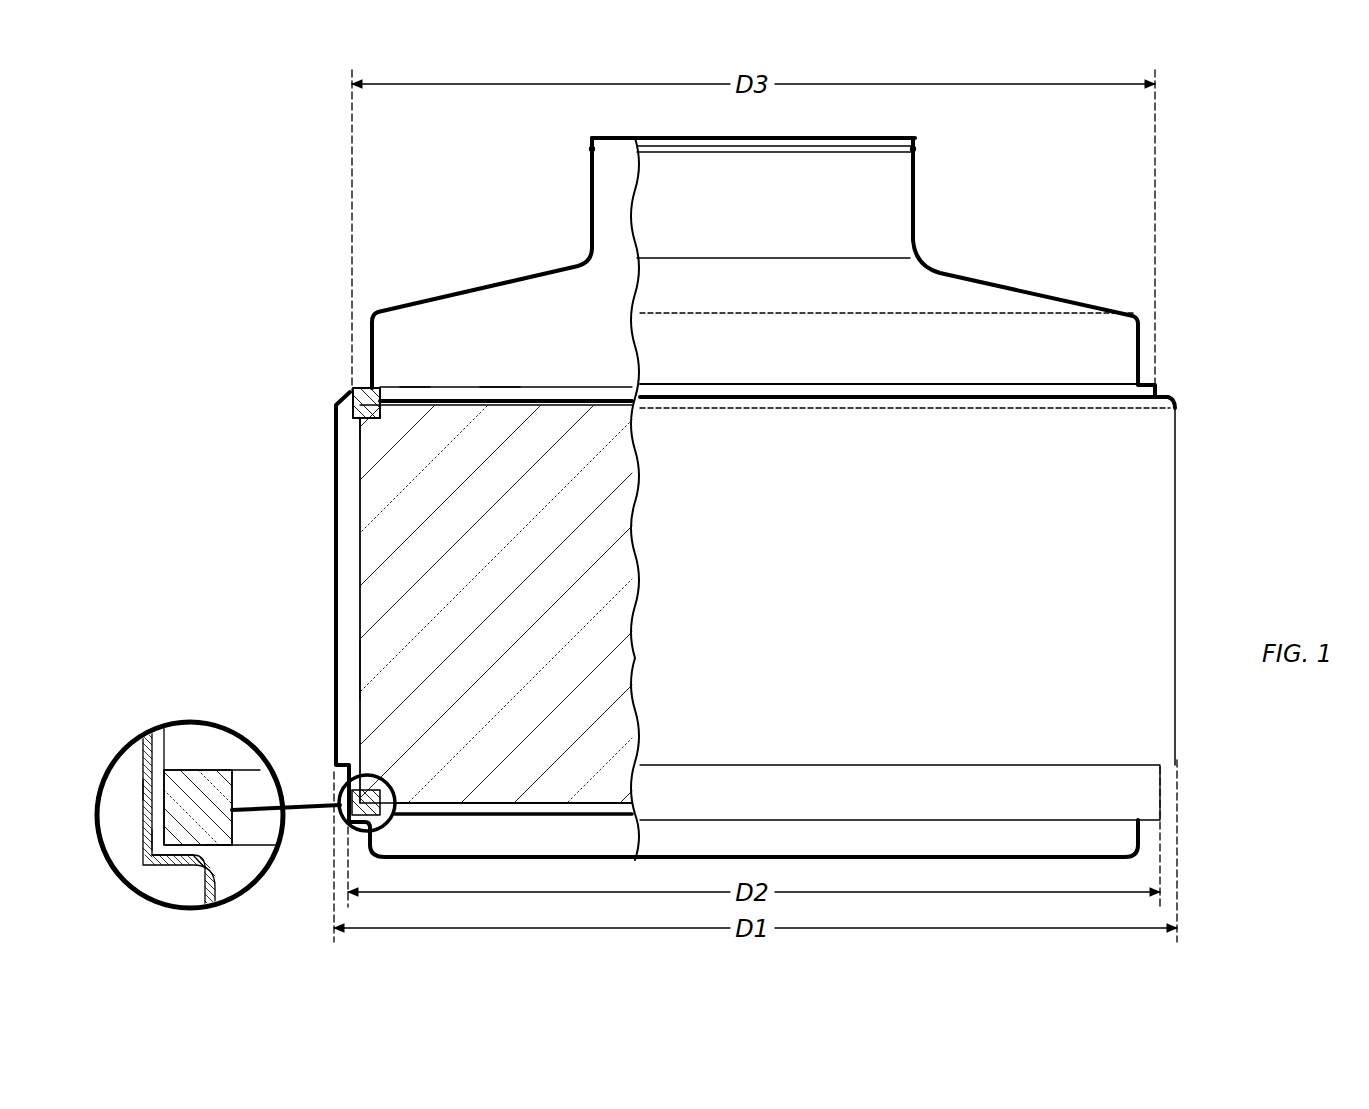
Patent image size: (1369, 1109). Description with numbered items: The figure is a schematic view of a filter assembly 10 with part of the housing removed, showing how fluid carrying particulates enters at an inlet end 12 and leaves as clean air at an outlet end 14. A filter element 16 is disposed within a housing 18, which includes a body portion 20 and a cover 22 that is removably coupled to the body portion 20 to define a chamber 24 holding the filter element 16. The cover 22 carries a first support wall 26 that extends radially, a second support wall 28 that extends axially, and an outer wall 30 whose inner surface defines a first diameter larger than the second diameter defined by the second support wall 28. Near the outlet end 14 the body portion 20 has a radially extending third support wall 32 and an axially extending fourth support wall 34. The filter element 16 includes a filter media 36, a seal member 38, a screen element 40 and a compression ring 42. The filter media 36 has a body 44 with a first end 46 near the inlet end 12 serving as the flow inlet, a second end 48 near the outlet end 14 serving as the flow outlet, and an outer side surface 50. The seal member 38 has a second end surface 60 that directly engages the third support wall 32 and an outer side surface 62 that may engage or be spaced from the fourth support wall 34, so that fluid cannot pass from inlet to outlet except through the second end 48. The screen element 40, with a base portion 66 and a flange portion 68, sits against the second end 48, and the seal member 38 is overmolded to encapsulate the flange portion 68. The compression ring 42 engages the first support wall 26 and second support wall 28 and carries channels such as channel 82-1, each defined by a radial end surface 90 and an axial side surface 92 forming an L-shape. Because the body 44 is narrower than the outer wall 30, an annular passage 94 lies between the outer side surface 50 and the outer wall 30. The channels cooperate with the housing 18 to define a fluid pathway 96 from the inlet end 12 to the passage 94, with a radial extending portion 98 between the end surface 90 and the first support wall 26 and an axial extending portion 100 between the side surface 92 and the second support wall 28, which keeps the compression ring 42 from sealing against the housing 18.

The filter assembly 10 is at (190, 170).
The inlet end 12 is at (685, 860).
The outlet end 14 is at (880, 128).
The filter element 16 is at (352, 518).
The housing 18 is at (1140, 318).
The body portion 20 is at (1140, 350).
The cover 22 is at (1160, 800).
The chamber 24 is at (352, 425).
The first support wall 26 is at (165, 880).
The second support wall 28 is at (145, 800).
The outer wall 30 is at (332, 548).
The third support wall 32 is at (358, 392).
The fourth support wall 34 is at (360, 398).
The filter media 36 is at (388, 588).
The seal member 38 is at (356, 403).
The screen element 40 is at (443, 397).
The compression ring 42 is at (448, 815).
The body 44 is at (382, 622).
The first end 46 is at (540, 800).
The second end 48 is at (495, 401).
The outer side surface 50 is at (358, 662).
The second end surface 60 is at (381, 388).
The outer side surface 62 is at (355, 410).
The base portion 66 is at (412, 399).
The flange portion 68 is at (362, 416).
The channel 82-1 is at (198, 807).
The end surface 90 is at (190, 866).
The side surface 92 is at (150, 790).
The annular passage 94 is at (344, 697).
The fluid pathway 96 is at (215, 852).
The radial extending portion 98 is at (225, 850).
The axial extending portion 100 is at (157, 840).